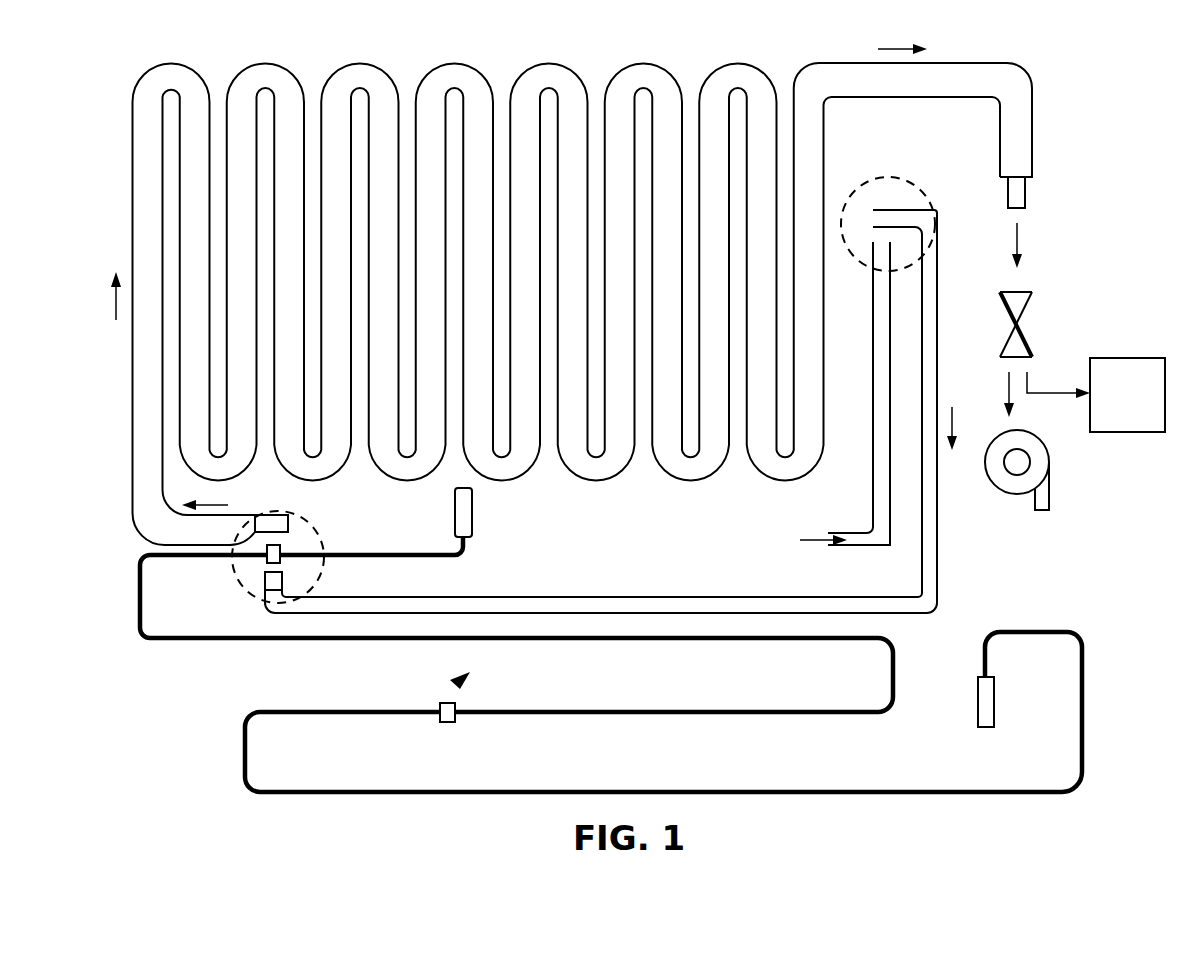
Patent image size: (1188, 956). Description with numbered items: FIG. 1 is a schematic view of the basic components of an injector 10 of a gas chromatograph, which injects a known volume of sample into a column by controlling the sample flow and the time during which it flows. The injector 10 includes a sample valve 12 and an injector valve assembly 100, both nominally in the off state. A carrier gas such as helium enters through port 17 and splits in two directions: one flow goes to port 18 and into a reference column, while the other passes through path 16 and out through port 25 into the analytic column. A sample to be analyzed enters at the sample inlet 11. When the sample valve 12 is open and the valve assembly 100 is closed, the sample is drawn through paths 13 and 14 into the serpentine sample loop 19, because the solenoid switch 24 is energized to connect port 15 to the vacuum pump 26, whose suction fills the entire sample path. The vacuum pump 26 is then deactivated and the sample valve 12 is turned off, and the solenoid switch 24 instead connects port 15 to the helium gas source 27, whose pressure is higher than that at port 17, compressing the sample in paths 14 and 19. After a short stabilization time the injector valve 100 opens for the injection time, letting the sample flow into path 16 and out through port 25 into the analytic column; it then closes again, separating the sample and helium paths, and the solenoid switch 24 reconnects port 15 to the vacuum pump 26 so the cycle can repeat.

The injector 10 is at (74, 99).
The sample inlet 11 is at (840, 548).
The sample valve 12 is at (917, 183).
The path 13 is at (871, 318).
The path 14 is at (938, 302).
The port 15 is at (1025, 192).
The path 16 is at (367, 558).
The port 17 is at (447, 703).
The port 18 is at (994, 700).
The sample loop 19 is at (132, 185).
The solenoid switch 24 is at (1031, 345).
The port 25 is at (475, 512).
The vacuum pump 26 is at (985, 462).
The helium gas source 27 is at (1096, 395).
The injector valve assembly 100 is at (243, 600).